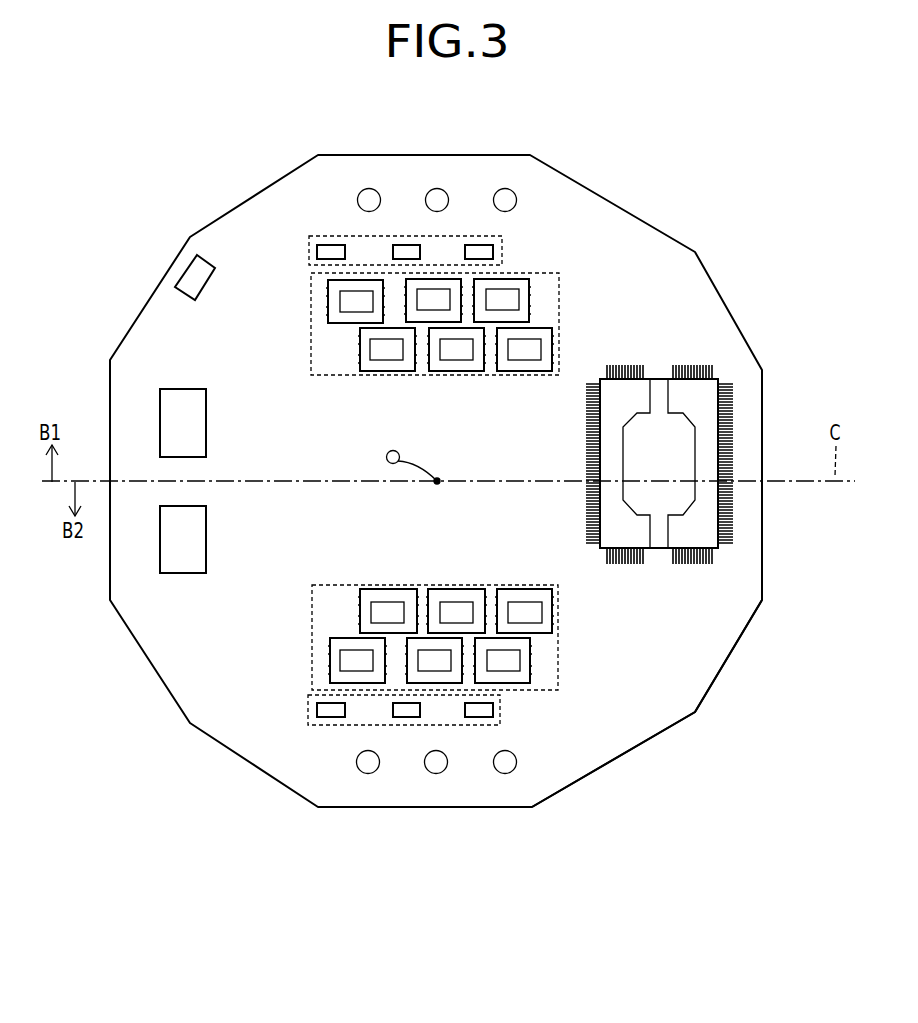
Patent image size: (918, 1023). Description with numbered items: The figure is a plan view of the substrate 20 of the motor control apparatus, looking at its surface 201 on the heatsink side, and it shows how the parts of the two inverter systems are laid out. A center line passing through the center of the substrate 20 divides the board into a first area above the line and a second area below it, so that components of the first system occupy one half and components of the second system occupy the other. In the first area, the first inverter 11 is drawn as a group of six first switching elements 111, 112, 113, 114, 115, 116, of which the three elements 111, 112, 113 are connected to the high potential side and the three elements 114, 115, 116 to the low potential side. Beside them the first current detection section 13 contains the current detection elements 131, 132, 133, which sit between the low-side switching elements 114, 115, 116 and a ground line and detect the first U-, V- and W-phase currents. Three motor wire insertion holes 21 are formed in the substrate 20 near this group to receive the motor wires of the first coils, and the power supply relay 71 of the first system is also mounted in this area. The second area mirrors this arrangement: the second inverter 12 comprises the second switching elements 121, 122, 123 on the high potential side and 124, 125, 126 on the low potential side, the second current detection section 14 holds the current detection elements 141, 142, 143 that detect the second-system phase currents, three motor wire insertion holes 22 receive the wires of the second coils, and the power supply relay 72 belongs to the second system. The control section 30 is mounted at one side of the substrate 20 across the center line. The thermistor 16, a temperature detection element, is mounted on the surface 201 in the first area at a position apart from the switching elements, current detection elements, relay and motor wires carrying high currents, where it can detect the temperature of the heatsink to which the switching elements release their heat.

The substrate 20 is at (762, 542).
The surface 201 is at (712, 652).
The motor wire insertion holes 21 is at (369, 188).
The motor wire insertion holes 22 is at (368, 774).
The first inverter 11 is at (312, 342).
The second inverter 12 is at (312, 595).
The first current detection section 13 is at (502, 250).
The second current detection section 14 is at (503, 713).
The first switching element 111 is at (395, 365).
The first switching element 112 is at (466, 365).
The first switching element 113 is at (533, 364).
The first switching element 114 is at (338, 298).
The first switching element 115 is at (422, 315).
The first switching element 116 is at (490, 315).
The second switching element 121 is at (543, 597).
The second switching element 122 is at (443, 597).
The second switching element 123 is at (373, 597).
The second switching element 124 is at (532, 657).
The second switching element 125 is at (423, 645).
The second switching element 126 is at (328, 657).
The current detection element 131 is at (330, 249).
The current detection element 132 is at (410, 249).
The current detection element 133 is at (480, 249).
The current detection element 141 is at (477, 711).
The current detection element 142 is at (408, 711).
The current detection element 143 is at (330, 711).
The thermistor 16 is at (181, 271).
The control section 30 is at (707, 407).
The power supply relay 71 is at (206, 426).
The power supply relay 72 is at (206, 532).